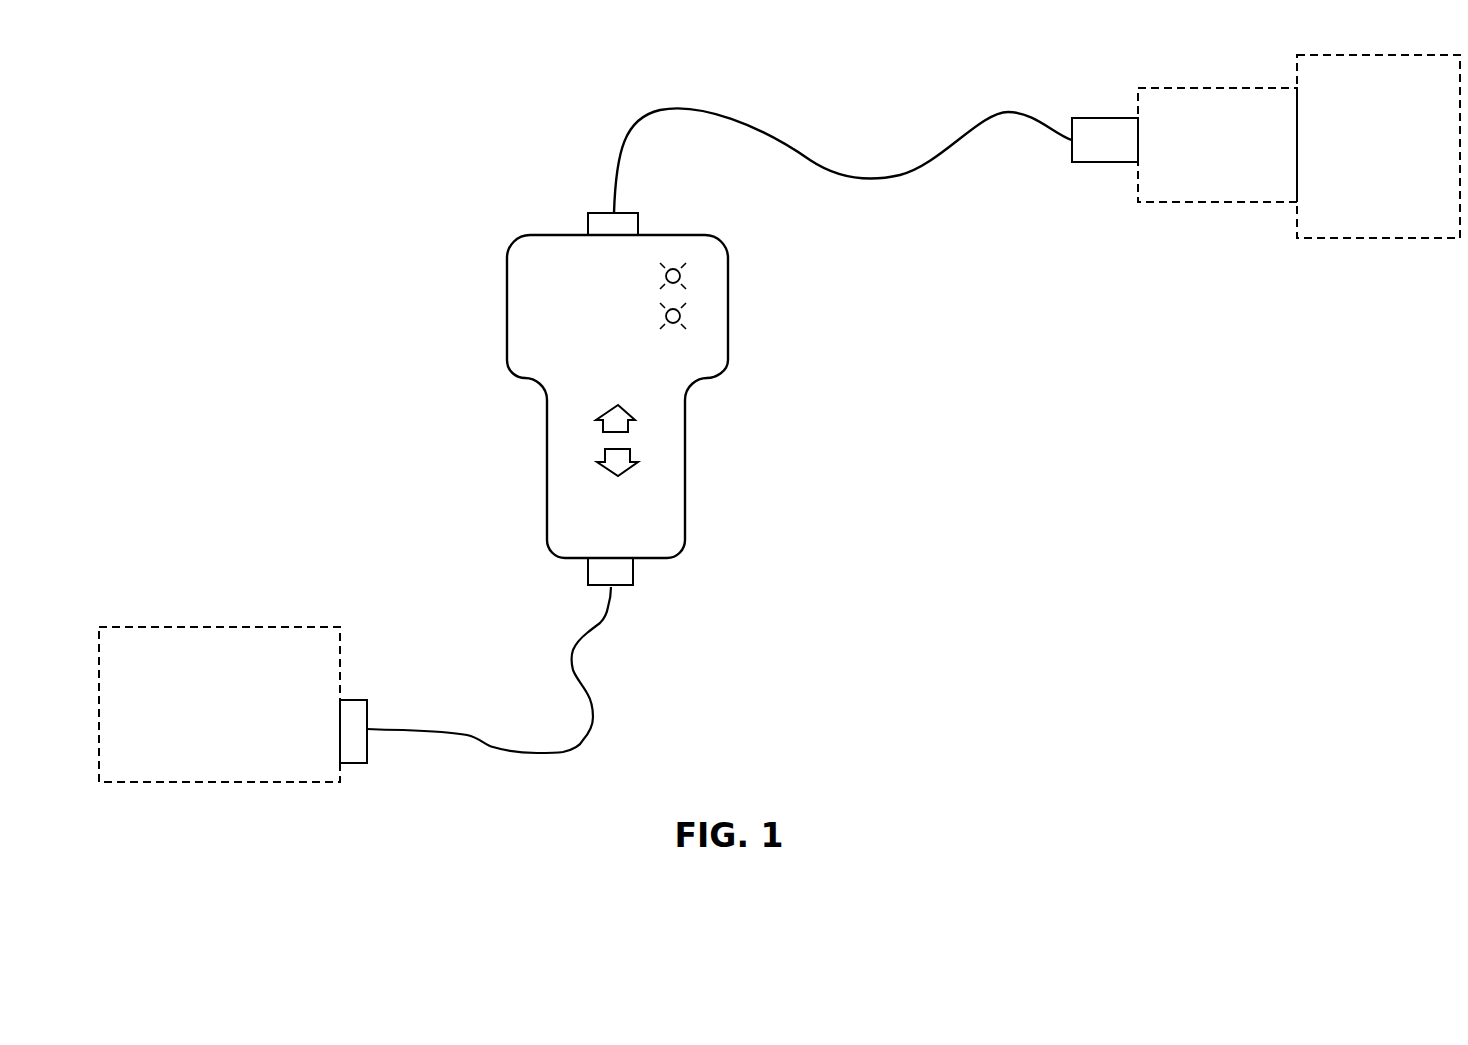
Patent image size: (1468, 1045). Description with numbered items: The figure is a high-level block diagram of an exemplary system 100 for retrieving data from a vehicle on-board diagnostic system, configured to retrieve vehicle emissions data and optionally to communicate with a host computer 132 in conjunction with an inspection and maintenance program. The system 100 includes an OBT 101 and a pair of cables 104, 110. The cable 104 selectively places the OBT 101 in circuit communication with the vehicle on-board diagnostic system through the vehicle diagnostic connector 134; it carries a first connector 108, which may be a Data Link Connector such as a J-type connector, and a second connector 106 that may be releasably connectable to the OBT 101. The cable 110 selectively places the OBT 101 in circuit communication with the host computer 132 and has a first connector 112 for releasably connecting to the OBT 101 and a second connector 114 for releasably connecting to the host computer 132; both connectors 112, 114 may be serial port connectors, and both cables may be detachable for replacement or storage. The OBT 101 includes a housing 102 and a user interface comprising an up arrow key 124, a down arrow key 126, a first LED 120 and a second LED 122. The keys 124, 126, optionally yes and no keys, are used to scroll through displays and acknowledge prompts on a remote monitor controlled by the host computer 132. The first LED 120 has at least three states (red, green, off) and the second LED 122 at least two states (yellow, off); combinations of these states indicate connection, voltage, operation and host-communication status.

The system 100 is at (250, 129).
The OBT 101 is at (756, 397).
The housing 102 is at (542, 447).
The cable 104 is at (808, 160).
The second connector 106 is at (590, 213).
The first connector 108 is at (1072, 160).
The cable 110 is at (580, 730).
The first connector 112 is at (633, 585).
The second connector 114 is at (345, 700).
The first LED 120 is at (680, 274).
The second LED 122 is at (680, 318).
The up arrow key 124 is at (633, 421).
The down arrow key 126 is at (636, 463).
The host computer 132 is at (230, 627).
The vehicle diagnostic connector 134 is at (1170, 202).